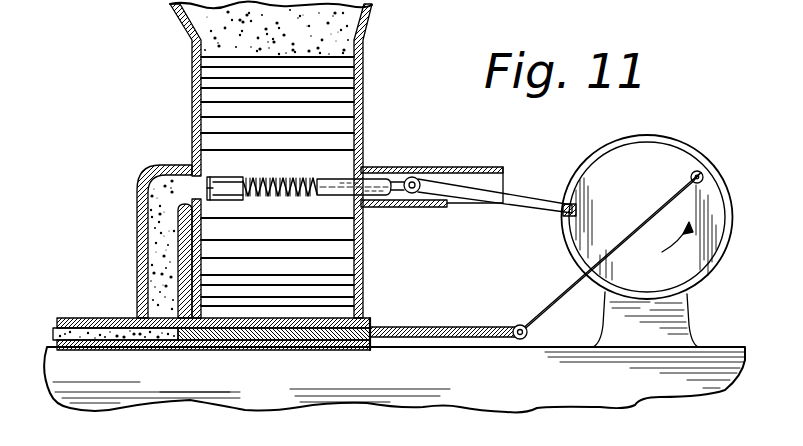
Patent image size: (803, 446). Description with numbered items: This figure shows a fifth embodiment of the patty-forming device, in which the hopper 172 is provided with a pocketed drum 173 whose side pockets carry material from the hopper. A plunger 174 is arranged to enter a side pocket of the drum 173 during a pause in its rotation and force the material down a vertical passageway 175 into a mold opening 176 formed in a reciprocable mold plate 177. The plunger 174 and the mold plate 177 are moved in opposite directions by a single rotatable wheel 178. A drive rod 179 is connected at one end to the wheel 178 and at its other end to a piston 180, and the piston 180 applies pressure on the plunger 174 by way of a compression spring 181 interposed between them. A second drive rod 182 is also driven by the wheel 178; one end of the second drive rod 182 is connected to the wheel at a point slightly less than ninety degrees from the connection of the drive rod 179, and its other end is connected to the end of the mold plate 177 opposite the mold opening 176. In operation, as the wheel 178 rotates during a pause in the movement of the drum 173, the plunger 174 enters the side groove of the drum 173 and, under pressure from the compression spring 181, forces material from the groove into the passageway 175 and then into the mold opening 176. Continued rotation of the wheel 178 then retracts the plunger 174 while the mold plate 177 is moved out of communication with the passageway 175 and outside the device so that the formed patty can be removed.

The hopper 172 is at (366, 81).
The pocketed drum 173 is at (345, 130).
The plunger 174 is at (228, 185).
The vertical passageway 175 is at (160, 228).
The mold opening 176 is at (98, 333).
The reciprocable mold plate 177 is at (440, 327).
The rotatable wheel 178 is at (643, 182).
The drive rod 179 is at (527, 203).
The piston 180 is at (372, 177).
The compression spring 181 is at (287, 190).
The second drive rod 182 is at (580, 296).